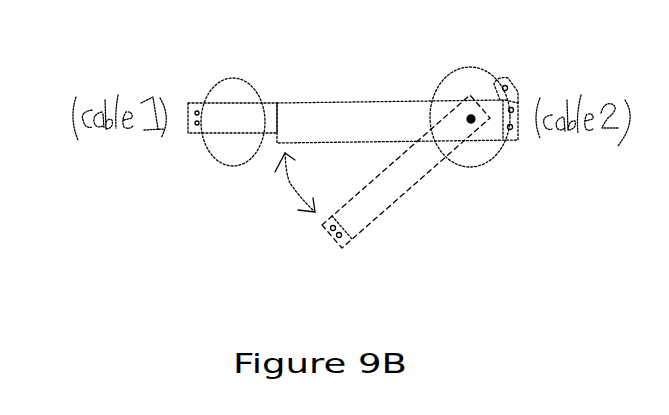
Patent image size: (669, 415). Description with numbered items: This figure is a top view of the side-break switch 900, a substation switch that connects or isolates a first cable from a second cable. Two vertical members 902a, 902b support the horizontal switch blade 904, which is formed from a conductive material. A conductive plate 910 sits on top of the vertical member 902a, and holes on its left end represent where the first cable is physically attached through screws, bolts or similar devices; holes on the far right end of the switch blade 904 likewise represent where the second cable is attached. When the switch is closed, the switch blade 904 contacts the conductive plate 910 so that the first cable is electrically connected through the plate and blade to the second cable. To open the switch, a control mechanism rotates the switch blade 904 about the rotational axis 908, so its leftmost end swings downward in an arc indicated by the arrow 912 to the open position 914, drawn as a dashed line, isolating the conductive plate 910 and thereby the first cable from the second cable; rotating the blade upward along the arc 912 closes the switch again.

The side-break switch 900 is at (200, 220).
The vertical member 902a is at (218, 82).
The vertical member 902b is at (468, 65).
The switch blade 904 is at (312, 125).
The rotational axis 908 is at (473, 117).
The conductive plate 910 is at (217, 123).
The arrow 912 is at (291, 187).
The open position 914 is at (403, 195).